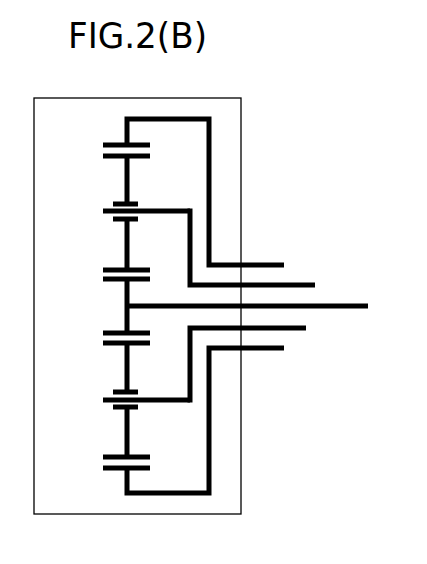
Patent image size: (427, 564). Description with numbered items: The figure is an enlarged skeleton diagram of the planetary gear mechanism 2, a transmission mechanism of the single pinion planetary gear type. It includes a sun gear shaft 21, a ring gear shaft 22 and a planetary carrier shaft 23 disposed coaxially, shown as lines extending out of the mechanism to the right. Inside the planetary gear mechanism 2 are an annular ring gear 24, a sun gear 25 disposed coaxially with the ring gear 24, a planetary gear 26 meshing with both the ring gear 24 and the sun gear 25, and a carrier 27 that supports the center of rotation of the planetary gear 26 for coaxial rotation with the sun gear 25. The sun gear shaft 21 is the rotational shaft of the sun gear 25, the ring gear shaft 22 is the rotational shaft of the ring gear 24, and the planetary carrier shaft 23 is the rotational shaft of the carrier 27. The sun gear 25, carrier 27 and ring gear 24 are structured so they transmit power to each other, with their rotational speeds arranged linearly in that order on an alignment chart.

The planetary gear mechanism 2 is at (242, 452).
The sun gear shaft 21 is at (340, 304).
The ring gear shaft 22 is at (265, 262).
The planetary carrier shaft 23 is at (300, 283).
The ring gear 24 is at (123, 132).
The sun gear 25 is at (122, 298).
The planetary gear 26 is at (122, 229).
The carrier 27 is at (171, 208).